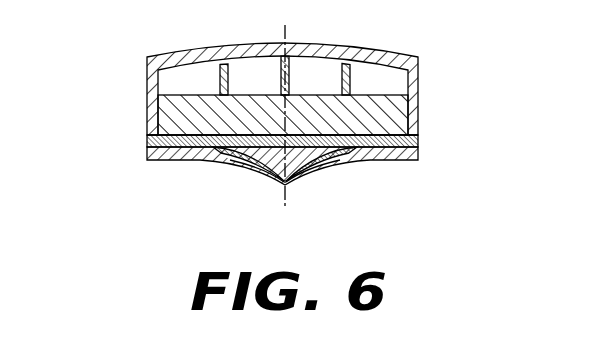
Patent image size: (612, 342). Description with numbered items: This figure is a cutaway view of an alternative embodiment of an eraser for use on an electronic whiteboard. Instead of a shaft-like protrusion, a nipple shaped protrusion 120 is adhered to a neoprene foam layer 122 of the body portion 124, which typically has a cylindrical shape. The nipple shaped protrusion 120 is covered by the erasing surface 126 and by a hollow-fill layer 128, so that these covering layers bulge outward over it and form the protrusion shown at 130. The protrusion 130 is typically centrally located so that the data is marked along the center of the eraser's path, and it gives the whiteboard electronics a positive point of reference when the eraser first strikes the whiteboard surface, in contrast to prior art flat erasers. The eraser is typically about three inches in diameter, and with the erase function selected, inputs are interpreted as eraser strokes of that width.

The nipple shaped protrusion 120 is at (308, 165).
The neoprene foam layer 122 is at (418, 102).
The body portion 124 is at (421, 63).
The erasing surface 126 is at (147, 156).
The hollow-fill layer 128 is at (147, 142).
The protrusion 130 is at (290, 189).